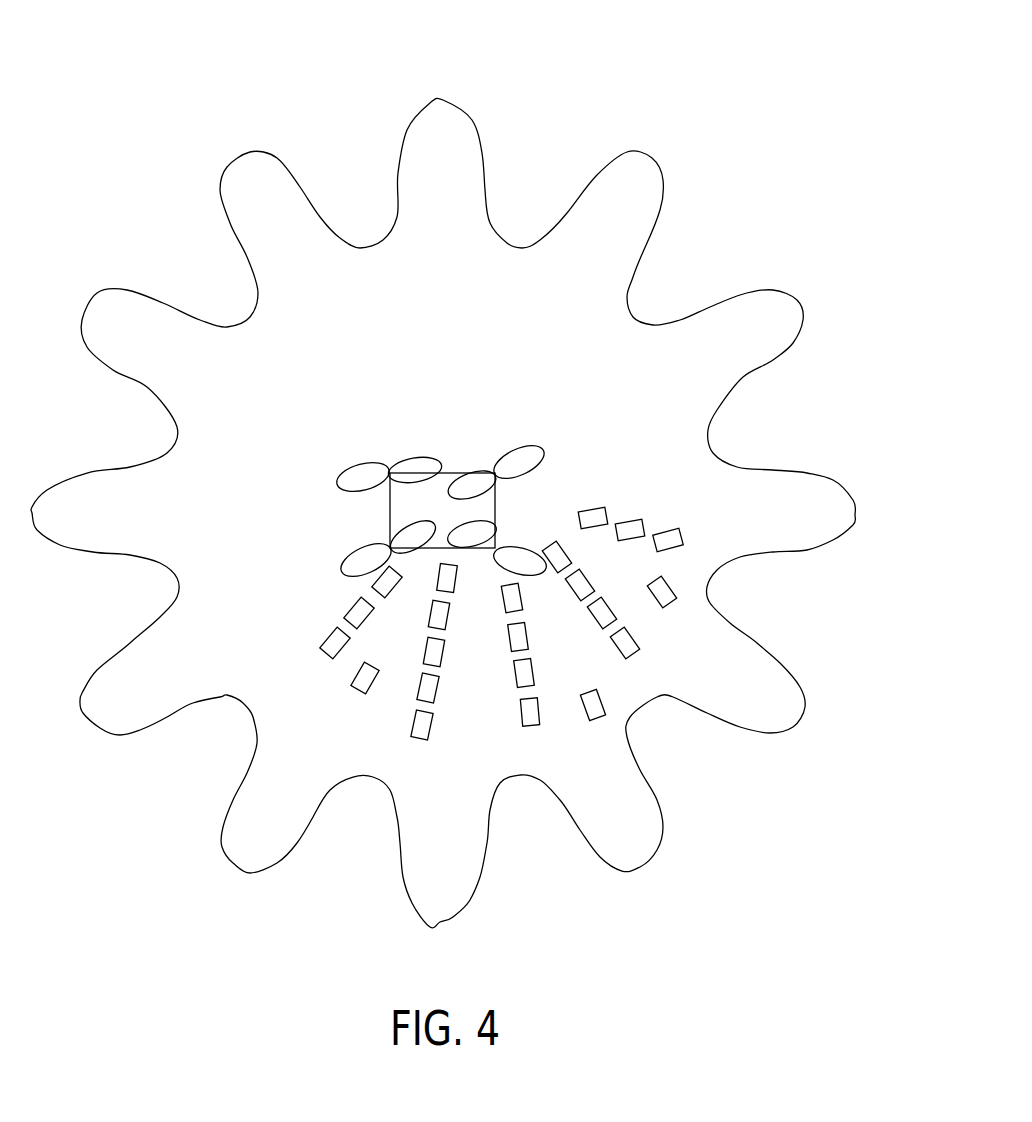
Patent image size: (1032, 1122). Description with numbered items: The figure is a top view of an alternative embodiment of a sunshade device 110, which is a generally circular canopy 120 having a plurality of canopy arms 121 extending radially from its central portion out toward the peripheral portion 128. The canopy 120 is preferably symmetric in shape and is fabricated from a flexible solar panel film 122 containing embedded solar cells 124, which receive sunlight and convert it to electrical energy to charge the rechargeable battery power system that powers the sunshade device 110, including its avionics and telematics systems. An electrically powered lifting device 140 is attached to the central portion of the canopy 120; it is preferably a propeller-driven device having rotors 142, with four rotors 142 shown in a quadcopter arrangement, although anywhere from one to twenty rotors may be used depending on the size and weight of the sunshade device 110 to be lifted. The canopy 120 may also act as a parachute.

The sunshade device 110 is at (250, 91).
The canopy 120 is at (568, 357).
The canopy arms 121 is at (810, 492).
The flexible solar panel film 122 is at (217, 567).
The solar cells 124 is at (430, 707).
The peripheral portion 128 is at (412, 863).
The electrically powered lifting device 140 is at (390, 508).
The rotors 142 is at (368, 476).